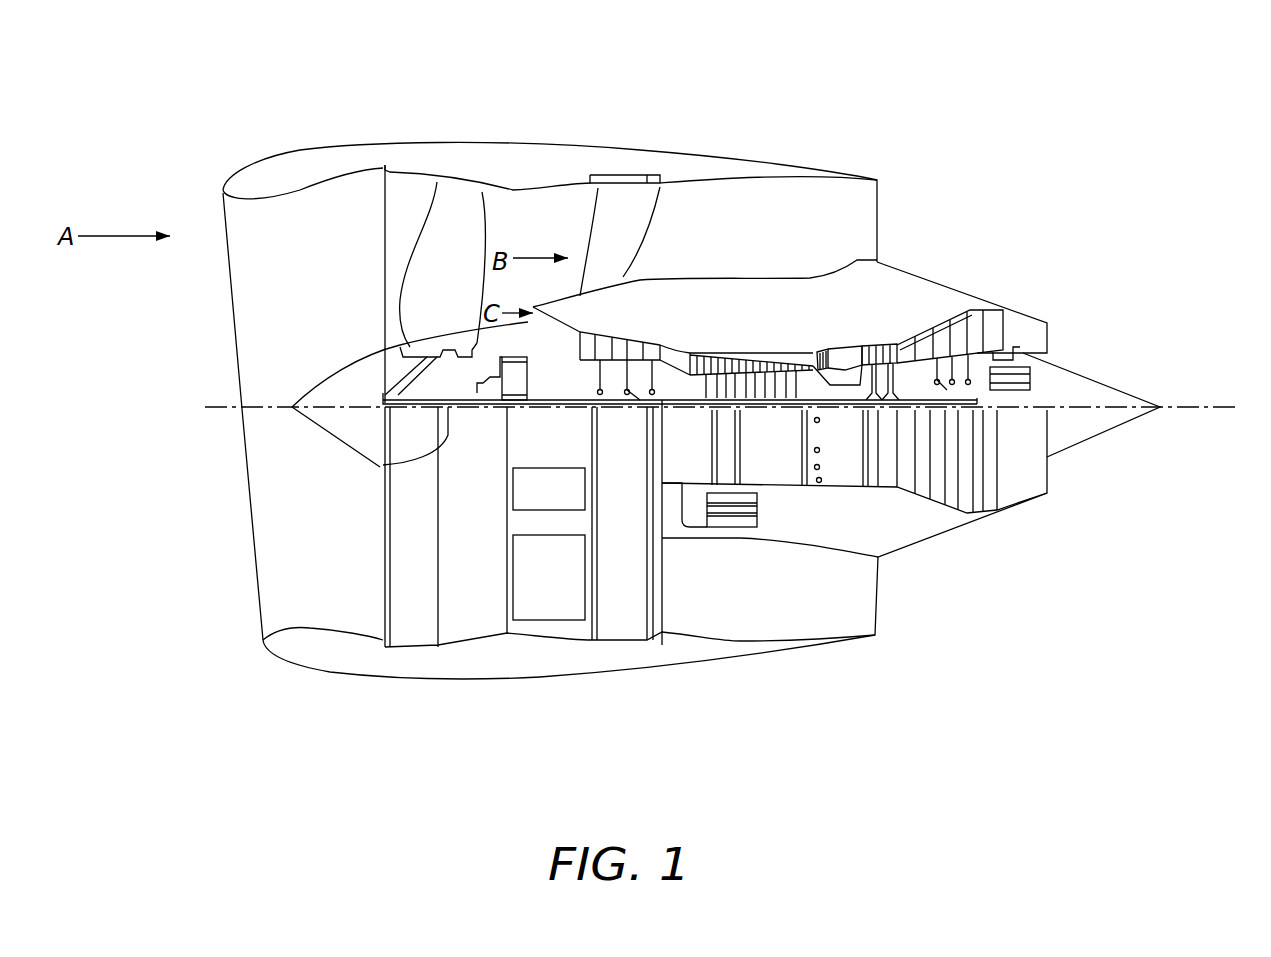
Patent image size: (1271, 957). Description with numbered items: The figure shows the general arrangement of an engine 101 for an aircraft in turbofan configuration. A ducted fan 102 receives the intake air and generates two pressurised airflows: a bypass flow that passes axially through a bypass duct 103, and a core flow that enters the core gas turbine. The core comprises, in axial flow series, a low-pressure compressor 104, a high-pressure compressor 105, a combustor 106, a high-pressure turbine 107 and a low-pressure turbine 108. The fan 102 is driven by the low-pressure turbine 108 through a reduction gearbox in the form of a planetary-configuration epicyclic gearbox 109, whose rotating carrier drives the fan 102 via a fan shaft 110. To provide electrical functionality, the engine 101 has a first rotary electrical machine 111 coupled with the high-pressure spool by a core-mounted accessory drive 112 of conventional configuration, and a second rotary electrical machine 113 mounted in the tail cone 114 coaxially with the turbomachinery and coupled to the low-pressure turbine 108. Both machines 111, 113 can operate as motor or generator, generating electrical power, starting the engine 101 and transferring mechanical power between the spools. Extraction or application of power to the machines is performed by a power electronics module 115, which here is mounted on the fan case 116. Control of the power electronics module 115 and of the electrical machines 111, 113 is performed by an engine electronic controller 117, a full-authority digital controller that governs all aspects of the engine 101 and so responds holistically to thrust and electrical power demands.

The engine 101 is at (288, 88).
The ducted fan 102 is at (466, 282).
The bypass duct 103 is at (556, 229).
The low-pressure compressor 104 is at (638, 333).
The high-pressure compressor 105 is at (773, 355).
The combustor 106 is at (830, 347).
The high-pressure turbine 107 is at (872, 347).
The low-pressure turbine 108 is at (950, 315).
The epicyclic gearbox 109 is at (533, 373).
The fan shaft 110 is at (383, 463).
The first rotary electrical machine 111 is at (757, 510).
The core-mounted accessory drive 112 is at (697, 513).
The second rotary electrical machine 113 is at (1020, 353).
The tail cone 114 is at (1110, 382).
The power electronics module 115 is at (513, 563).
The fan case 116 is at (413, 550).
The engine electronic controller 117 is at (513, 488).